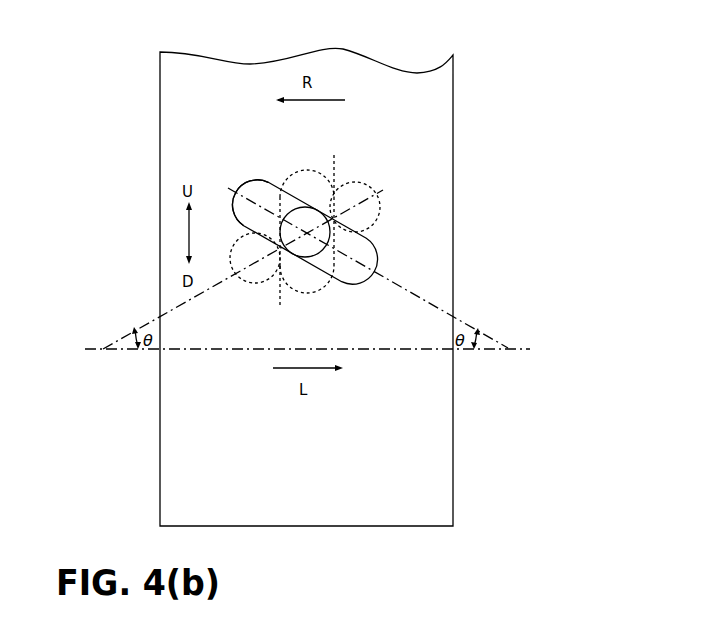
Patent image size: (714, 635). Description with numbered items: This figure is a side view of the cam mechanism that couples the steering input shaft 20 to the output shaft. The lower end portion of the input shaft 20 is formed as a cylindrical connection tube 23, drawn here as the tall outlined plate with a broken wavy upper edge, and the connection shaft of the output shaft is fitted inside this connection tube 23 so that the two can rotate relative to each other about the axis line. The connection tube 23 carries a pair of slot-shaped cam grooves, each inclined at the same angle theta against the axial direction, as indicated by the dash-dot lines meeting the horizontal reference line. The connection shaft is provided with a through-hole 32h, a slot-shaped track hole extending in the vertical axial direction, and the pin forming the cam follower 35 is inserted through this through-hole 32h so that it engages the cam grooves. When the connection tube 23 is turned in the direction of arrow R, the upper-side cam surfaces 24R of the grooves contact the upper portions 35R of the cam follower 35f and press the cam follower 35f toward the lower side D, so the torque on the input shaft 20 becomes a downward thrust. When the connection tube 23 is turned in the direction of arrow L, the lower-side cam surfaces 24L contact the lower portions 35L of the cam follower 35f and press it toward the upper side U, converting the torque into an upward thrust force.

The input shaft 20 is at (357, 287).
The connection tube 23 is at (453, 160).
The upper-side cam surfaces 24R is at (281, 184).
The lower-side cam surfaces 24L is at (334, 270).
The through-hole 32h is at (308, 170).
The cam follower 35 is at (318, 231).
The cam follower 35f is at (363, 232).
The upper portions of the cam follower 35R is at (324, 203).
The lower portions of the cam follower 35L is at (291, 253).